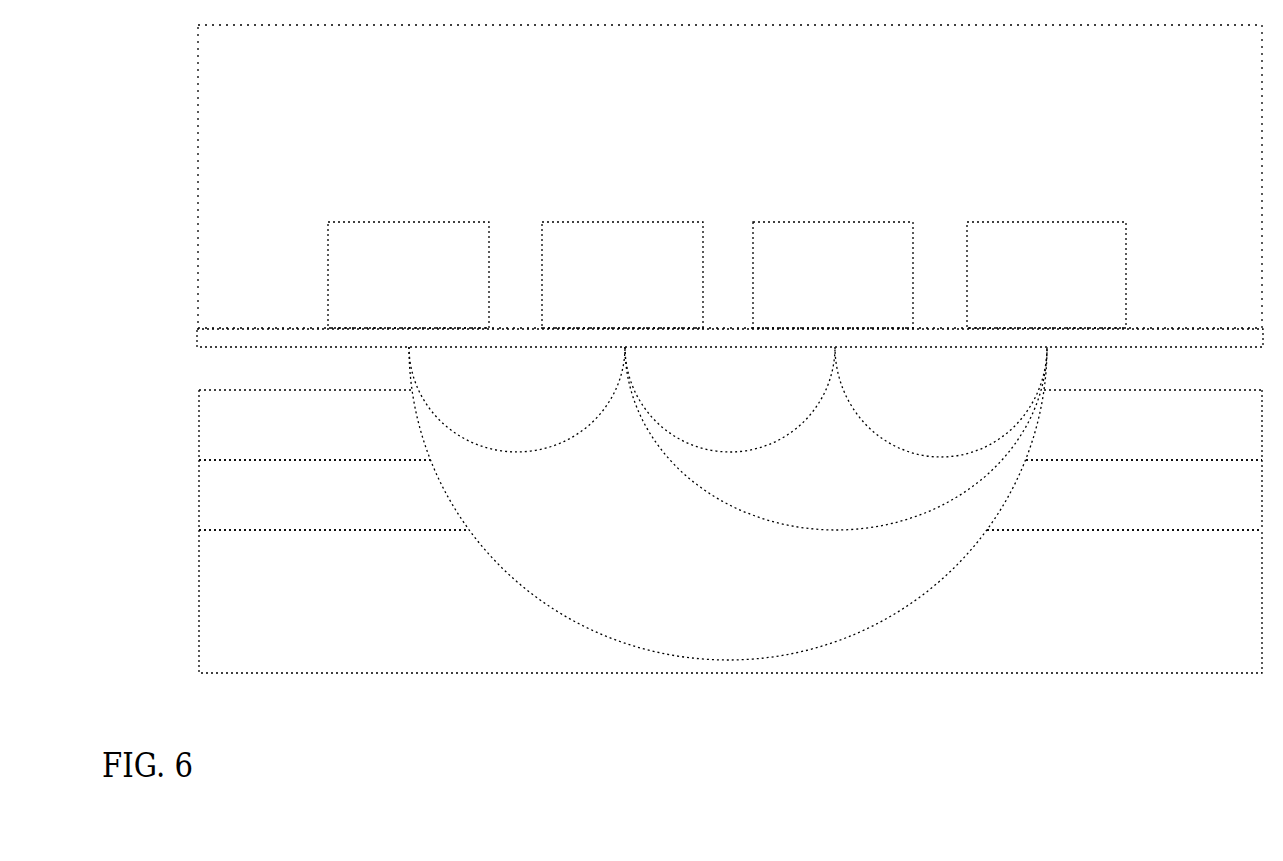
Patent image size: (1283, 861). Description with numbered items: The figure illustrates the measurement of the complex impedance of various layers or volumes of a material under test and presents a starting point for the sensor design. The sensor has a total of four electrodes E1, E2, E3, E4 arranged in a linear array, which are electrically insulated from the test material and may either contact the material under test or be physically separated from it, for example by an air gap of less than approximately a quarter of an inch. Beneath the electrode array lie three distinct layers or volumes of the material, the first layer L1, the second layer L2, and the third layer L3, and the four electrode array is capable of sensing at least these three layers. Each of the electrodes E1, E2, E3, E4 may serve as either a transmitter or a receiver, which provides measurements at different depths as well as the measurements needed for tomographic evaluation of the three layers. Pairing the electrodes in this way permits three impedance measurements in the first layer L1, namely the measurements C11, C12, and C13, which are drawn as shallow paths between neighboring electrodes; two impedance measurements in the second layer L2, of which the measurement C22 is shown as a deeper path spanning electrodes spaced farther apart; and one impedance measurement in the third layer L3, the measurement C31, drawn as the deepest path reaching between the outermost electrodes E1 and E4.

The first electrode E1 is at (408, 275).
The second electrode E2 is at (622, 275).
The third electrode E3 is at (833, 275).
The fourth electrode E4 is at (1046, 275).
The layer 1 L1 is at (730, 425).
The layer 2 L2 is at (730, 495).
The layer 3 L3 is at (730, 601).
The first impedance measurement in layer 1 C11 is at (517, 399).
The second impedance measurement in layer 1 C12 is at (730, 399).
The third impedance measurement in layer 1 C13 is at (941, 402).
The second impedance measurement in layer 2 C22 is at (836, 438).
The impedance measurement in layer 3 C31 is at (728, 503).